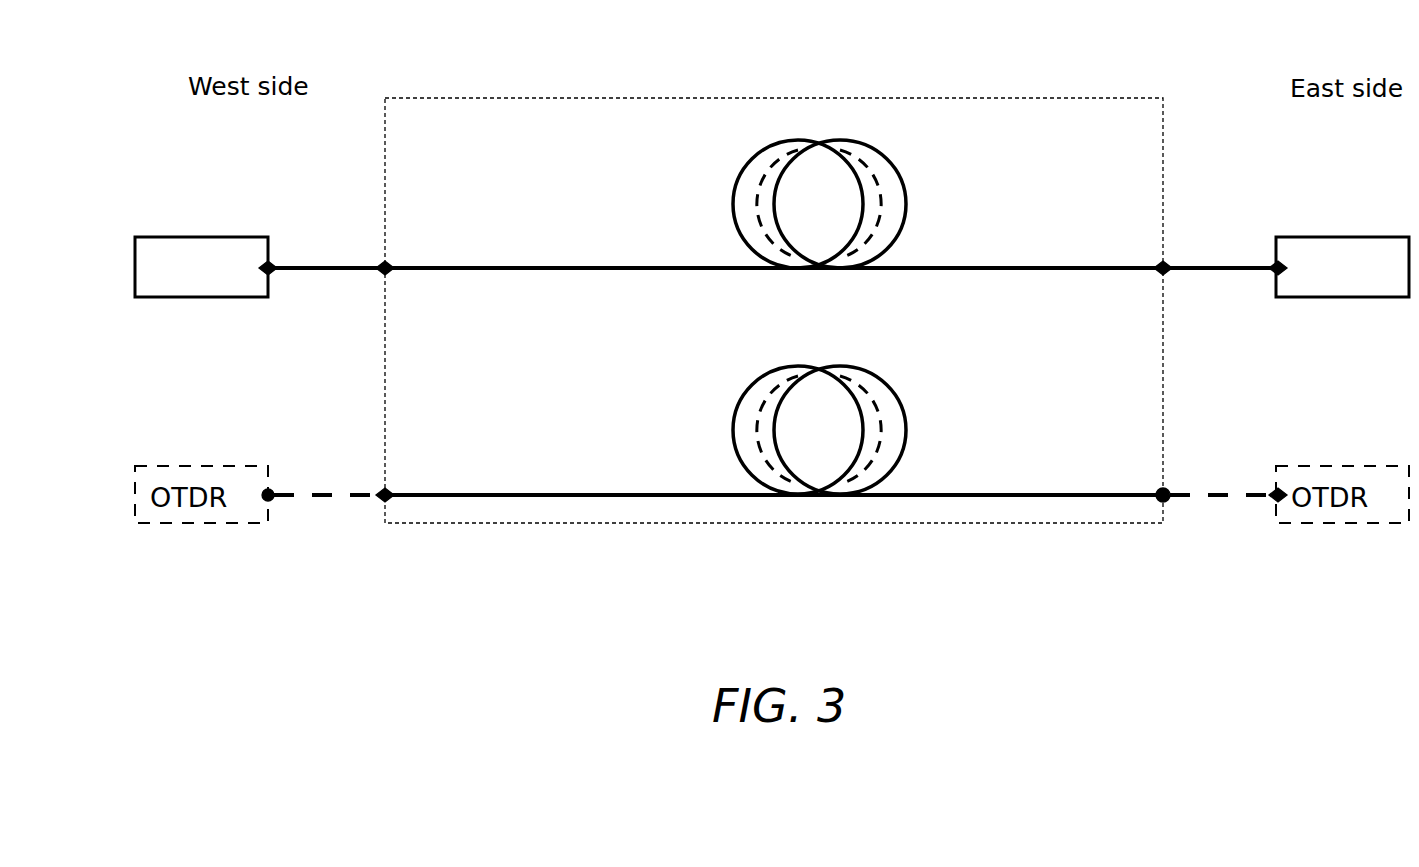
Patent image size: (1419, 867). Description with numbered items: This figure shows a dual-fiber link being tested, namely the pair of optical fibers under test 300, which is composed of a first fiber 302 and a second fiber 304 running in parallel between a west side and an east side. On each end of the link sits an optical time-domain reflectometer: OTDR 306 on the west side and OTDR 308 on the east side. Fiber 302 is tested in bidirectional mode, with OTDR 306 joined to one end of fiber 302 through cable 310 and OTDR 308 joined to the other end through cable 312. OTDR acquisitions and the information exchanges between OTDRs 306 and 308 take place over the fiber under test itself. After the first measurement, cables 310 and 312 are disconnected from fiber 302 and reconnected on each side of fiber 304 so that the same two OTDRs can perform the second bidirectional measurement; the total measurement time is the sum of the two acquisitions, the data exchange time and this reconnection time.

The pair of optical fibers under test 300 is at (607, 93).
The fiber 302 is at (680, 260).
The second fiber 304 is at (683, 485).
The OTDR 306 is at (207, 233).
The OTDR 308 is at (1358, 230).
The cable 310 is at (355, 263).
The cable 312 is at (1223, 256).